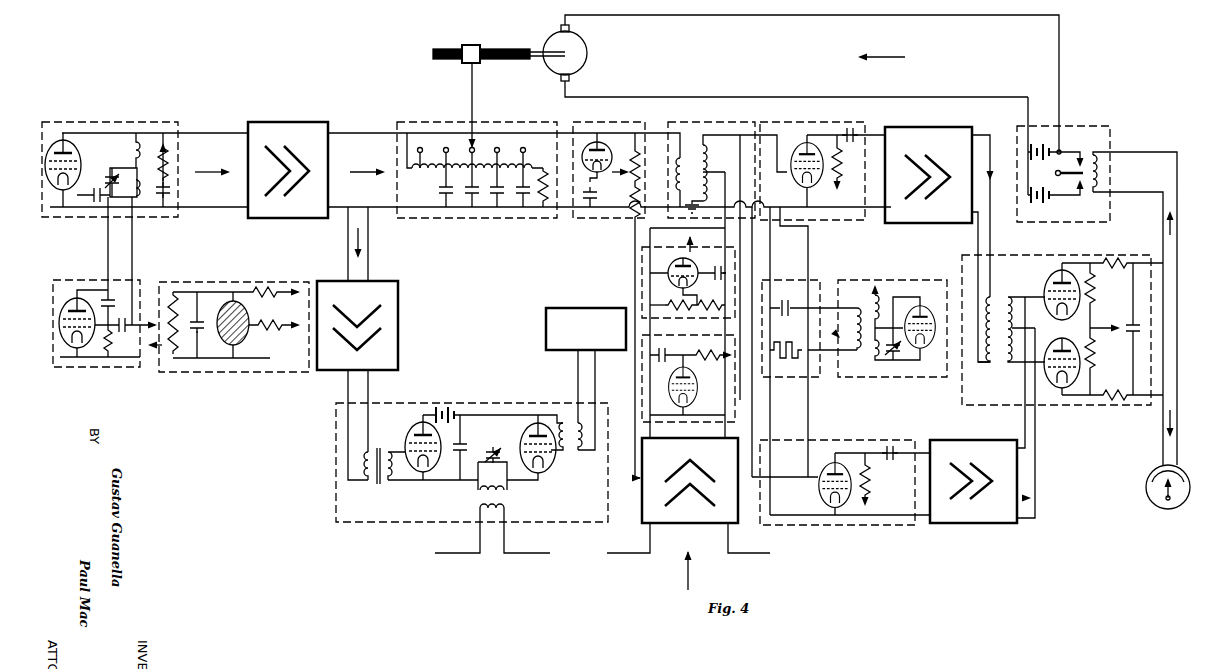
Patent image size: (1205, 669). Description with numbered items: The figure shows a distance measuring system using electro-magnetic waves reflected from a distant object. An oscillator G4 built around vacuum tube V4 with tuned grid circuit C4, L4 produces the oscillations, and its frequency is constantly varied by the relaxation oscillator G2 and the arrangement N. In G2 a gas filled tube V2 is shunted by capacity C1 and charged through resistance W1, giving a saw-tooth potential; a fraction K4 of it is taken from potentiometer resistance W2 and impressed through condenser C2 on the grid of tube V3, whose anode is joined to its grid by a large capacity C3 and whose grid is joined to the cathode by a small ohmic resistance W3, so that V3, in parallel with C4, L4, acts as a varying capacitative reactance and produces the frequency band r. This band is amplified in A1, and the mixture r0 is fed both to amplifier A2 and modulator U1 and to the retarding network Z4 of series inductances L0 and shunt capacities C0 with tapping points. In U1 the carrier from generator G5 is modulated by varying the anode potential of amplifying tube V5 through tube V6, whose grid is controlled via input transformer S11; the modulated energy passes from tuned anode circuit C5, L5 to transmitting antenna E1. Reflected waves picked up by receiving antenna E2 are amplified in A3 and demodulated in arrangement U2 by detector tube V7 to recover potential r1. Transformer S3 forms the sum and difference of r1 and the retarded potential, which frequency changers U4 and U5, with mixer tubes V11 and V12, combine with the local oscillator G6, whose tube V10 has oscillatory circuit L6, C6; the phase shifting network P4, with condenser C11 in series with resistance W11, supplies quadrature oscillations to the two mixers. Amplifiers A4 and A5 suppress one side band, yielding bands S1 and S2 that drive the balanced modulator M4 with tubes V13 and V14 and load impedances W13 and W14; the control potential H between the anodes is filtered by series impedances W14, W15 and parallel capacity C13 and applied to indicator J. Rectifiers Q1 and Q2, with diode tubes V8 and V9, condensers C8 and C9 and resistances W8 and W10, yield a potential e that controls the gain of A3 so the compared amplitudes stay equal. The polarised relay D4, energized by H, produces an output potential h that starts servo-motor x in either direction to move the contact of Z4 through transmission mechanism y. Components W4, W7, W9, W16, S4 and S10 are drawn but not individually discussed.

The transmission mechanism y is at (498, 52).
The servo-motor x is at (584, 55).
The output potential of the relay h is at (892, 50).
The frequency band r is at (212, 163).
The amplified oscillation mixture r0 is at (367, 163).
The demodulated potential r1 is at (532, 243).
The oscillator G4 is at (110, 157).
The vacuum tube V4 is at (65, 170).
The inductance of tuned grid circuit L4 is at (125, 165).
The capacity of tuned grid circuit C4 is at (110, 173).
The amplifier A1 is at (273, 122).
The retarding arrangement Z4 is at (521, 161).
The series inductances L0 is at (467, 170).
The shunt capacities C0 is at (484, 187).
The resistor W4 is at (551, 158).
The rectifier Q1 is at (620, 160).
The diode tube V8 is at (604, 158).
The condenser C8 is at (599, 197).
The resistor W7 is at (640, 171).
The resistance W8 is at (640, 198).
The transformer S3 is at (695, 125).
The frequency changer U5 is at (822, 160).
The mixer tube V12 is at (790, 115).
The amplifier A5 is at (919, 127).
The frequency band S2 is at (901, 255).
The polarised relay D4 is at (1076, 126).
The control potential H is at (1152, 228).
The modulating circuit M4 is at (1062, 332).
The transformer S4 is at (993, 366).
The vacuum tube of balanced modulator V13 is at (1046, 280).
The vacuum tube of balanced modulator V14 is at (1067, 362).
The series impedance W15 is at (1125, 252).
The load impedance W13 is at (1104, 299).
The load impedance W14 is at (1104, 358).
The resistor W16 is at (1113, 398).
The parallel capacity C13 is at (1130, 312).
The indicator J is at (1146, 482).
The amplifier A4 is at (953, 440).
The frequency band S1 is at (1026, 491).
The frequency changer U4 is at (841, 473).
The mixer tube V11 is at (820, 491).
The phase shifting network P4 is at (791, 361).
The condenser C11 is at (789, 317).
The ohmic resistance W11 is at (786, 359).
The local oscillator G6 is at (892, 317).
The inductance of oscillatory circuit L6 is at (872, 347).
The oscillating tube V10 is at (922, 301).
The capacity of oscillatory circuit C6 is at (899, 357).
The rectifier Q2 is at (667, 305).
The diode tube V9 is at (674, 278).
The condenser C9 is at (712, 265).
The resistance W10 is at (676, 308).
The resistor W9 is at (716, 308).
The demodulating arrangement U2 is at (671, 378).
The vacuum tube detector V7 is at (687, 385).
The amplifier A3 is at (645, 524).
The control potential e is at (630, 358).
The receiving antenna E2 is at (686, 562).
The frequency varying arrangement N is at (105, 287).
The vacuum tube V3 is at (97, 323).
The capacity C3 is at (116, 266).
The condenser C2 is at (123, 332).
The ohmic resistance W3 is at (99, 341).
The relaxation potential fraction K4 is at (156, 360).
The relaxation oscillator G2 is at (234, 314).
The potentiometer resistance W2 is at (183, 322).
The capacity C1 is at (202, 325).
The gas filled tube V2 is at (248, 332).
The resistance W1 is at (278, 309).
The amplifier A2 is at (372, 281).
The carrier frequency generator G5 is at (546, 320).
The modulator-amplifier U1 is at (472, 450).
The input transformer S11 is at (372, 484).
The tube V6 is at (406, 440).
The inductance of tuned anode circuit L5 is at (507, 496).
The capacity of tuned anode circuit C5 is at (499, 446).
The amplifying tube V5 is at (542, 472).
The transformer S10 is at (577, 452).
The transmitting antenna E1 is at (492, 530).